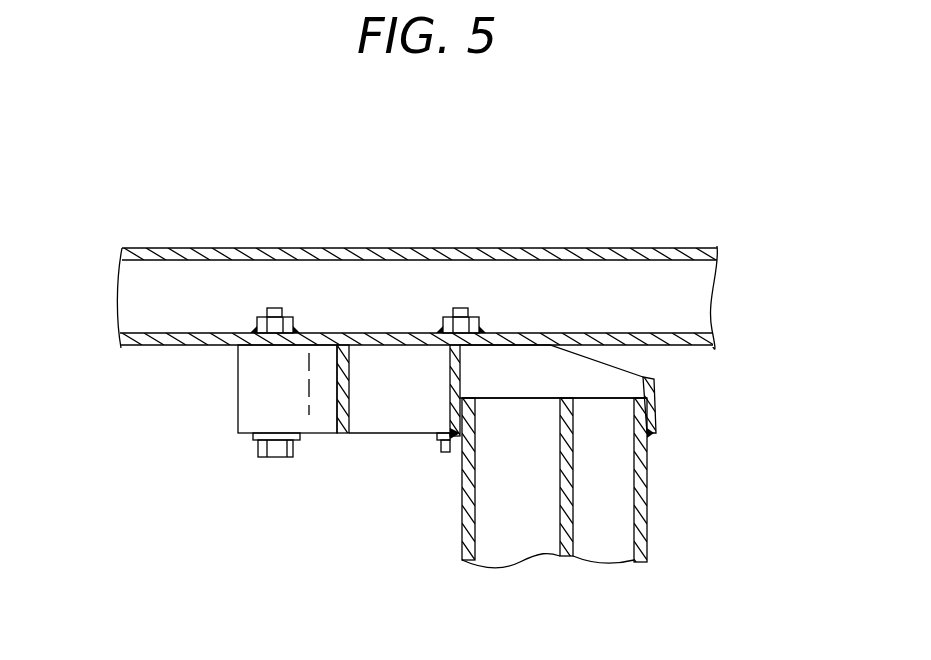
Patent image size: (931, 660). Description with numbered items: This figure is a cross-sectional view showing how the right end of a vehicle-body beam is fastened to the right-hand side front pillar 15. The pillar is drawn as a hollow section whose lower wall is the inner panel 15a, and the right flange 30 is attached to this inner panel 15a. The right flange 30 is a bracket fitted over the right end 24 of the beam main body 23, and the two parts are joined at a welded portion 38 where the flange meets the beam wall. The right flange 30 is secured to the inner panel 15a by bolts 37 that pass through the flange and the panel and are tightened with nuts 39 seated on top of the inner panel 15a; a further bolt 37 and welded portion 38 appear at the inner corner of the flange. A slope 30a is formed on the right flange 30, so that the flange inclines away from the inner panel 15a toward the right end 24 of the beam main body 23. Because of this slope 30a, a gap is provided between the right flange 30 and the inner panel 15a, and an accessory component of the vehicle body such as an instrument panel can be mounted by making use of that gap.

The right-hand side front pillar 15 is at (408, 232).
The inner panel 15a is at (217, 306).
The nut 39 is at (299, 326).
The right flange 30 is at (237, 380).
The slope 30a is at (622, 360).
The right end of beam main body 24 is at (655, 406).
The welded portion 38 is at (446, 452).
The bolt 37 is at (270, 458).
The beam main body 23 is at (647, 528).